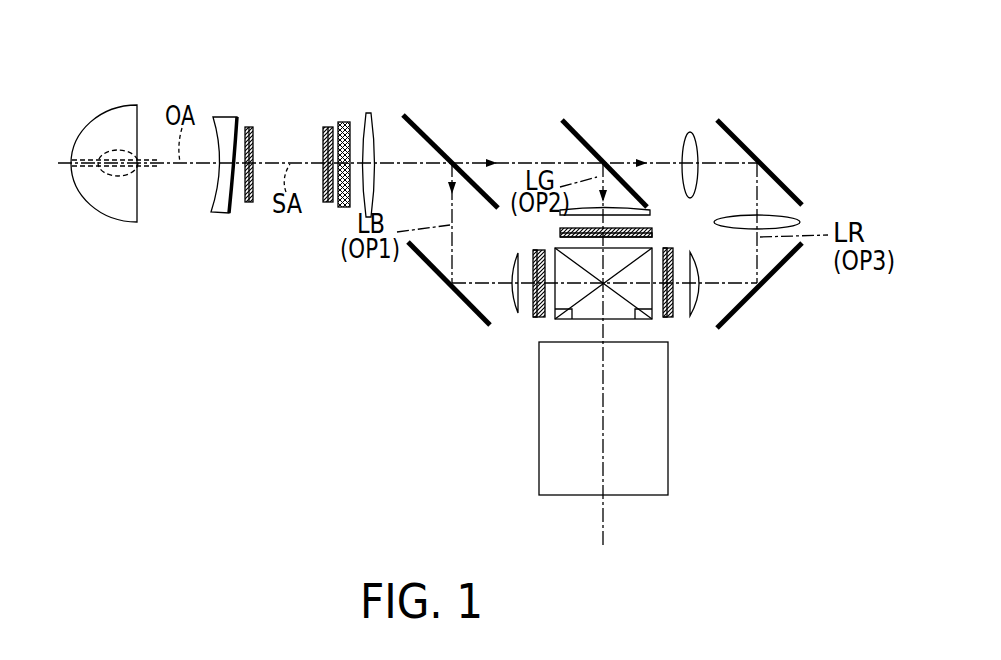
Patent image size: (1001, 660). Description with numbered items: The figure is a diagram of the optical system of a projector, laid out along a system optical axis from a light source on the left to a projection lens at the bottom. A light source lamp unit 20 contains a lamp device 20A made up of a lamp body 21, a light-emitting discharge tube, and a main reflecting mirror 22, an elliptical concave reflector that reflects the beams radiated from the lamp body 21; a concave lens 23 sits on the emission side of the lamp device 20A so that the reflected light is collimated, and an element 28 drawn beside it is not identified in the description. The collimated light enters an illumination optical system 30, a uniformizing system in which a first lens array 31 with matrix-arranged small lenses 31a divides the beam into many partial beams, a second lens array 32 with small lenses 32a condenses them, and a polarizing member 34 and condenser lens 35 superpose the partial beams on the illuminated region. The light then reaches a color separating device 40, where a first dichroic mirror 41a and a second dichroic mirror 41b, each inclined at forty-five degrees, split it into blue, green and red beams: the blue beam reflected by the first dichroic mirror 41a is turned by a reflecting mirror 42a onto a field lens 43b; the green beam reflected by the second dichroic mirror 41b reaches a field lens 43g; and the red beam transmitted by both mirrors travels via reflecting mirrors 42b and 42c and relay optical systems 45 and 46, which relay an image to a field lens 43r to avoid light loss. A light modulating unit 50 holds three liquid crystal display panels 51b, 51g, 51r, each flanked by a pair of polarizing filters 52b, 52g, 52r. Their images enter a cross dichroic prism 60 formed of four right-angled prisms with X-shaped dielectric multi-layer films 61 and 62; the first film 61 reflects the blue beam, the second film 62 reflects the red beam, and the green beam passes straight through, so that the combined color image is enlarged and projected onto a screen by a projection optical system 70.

The light source lamp unit 20 is at (238, 253).
The lamp device 20A is at (95, 62).
The lamp body 21 is at (75, 155).
The main reflecting mirror 22 is at (103, 115).
The concave lens 23 is at (211, 212).
The collimating concave lens 28 is at (234, 118).
The illumination optical system 30 is at (289, 78).
The first lens array 31 is at (249, 127).
The small lenses 31a is at (252, 203).
The second lens array 32 is at (328, 127).
The small lenses 32a is at (328, 203).
The polarizing member 34 is at (343, 122).
The condenser lens 35 is at (368, 113).
The color separating device 40 is at (533, 108).
The first dichroic mirror 41a is at (441, 140).
The second dichroic mirror 41b is at (573, 122).
The reflecting mirror 42a is at (420, 256).
The reflecting mirror 42b is at (752, 155).
The reflecting mirror 42c is at (783, 263).
The field lens 43b is at (510, 292).
The field lens 43g is at (560, 212).
The field lens 43r is at (705, 298).
The relay optical system (first lens) 45 is at (692, 130).
The relay optical system (second lens) 46 is at (800, 222).
The light modulating unit 50 is at (527, 299).
The liquid crystal display panel 51b is at (540, 320).
The liquid crystal display panel 51g is at (560, 232).
The liquid crystal display panel 51r is at (675, 297).
The polarizing filters 52b is at (538, 250).
The polarizing filters 52g is at (650, 233).
The polarizing filters 52r is at (666, 248).
The cross dichroic prism 60 is at (628, 324).
The first dielectric multi-layer film 61 is at (653, 318).
The second dielectric multi-layer film 62 is at (560, 322).
The projection optical system 70 is at (555, 432).